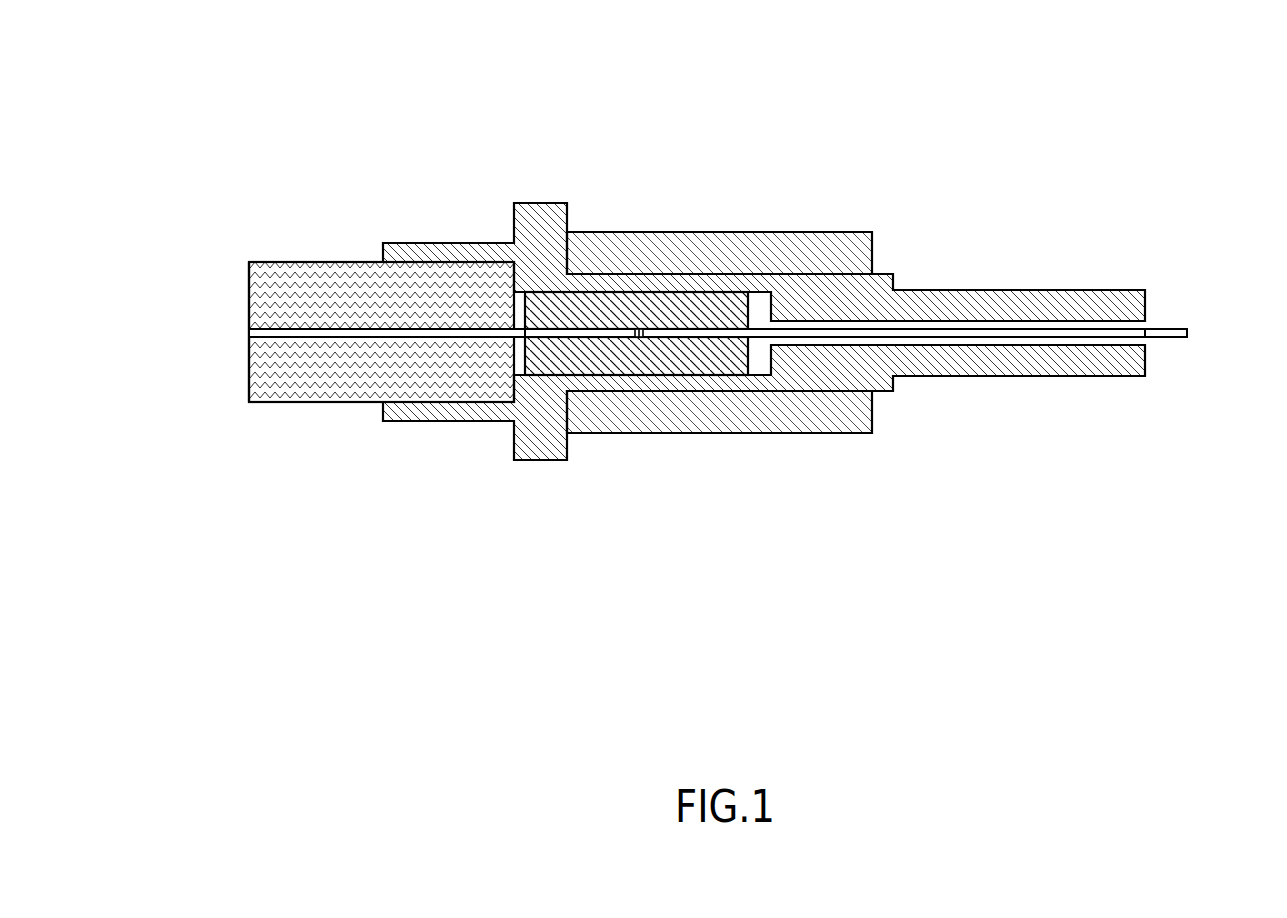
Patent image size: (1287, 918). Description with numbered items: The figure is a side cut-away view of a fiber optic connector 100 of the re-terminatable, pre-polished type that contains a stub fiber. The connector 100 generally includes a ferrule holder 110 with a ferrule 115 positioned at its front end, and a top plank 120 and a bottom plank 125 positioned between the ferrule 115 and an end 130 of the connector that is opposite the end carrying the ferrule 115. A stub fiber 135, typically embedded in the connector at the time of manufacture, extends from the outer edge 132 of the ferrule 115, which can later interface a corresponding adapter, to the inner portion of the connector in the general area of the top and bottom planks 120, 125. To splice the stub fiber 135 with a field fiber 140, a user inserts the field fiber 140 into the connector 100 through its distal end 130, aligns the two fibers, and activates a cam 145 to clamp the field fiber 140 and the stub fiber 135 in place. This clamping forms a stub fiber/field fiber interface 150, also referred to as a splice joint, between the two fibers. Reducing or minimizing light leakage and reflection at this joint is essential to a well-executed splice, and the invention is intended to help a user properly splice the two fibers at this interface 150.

The connector 100 is at (695, 274).
The ferrule holder 110 is at (443, 421).
The ferrule 115 is at (293, 404).
The top plank 120 is at (710, 300).
The bottom plank 125 is at (698, 367).
The end of the connector 130 is at (1179, 306).
The outer edge of the ferrule 132 is at (248, 306).
The stub fiber 135 is at (317, 333).
The field fiber 140 is at (992, 333).
The cam 145 is at (800, 433).
The stub fiber/field fiber interface 150 is at (639, 328).